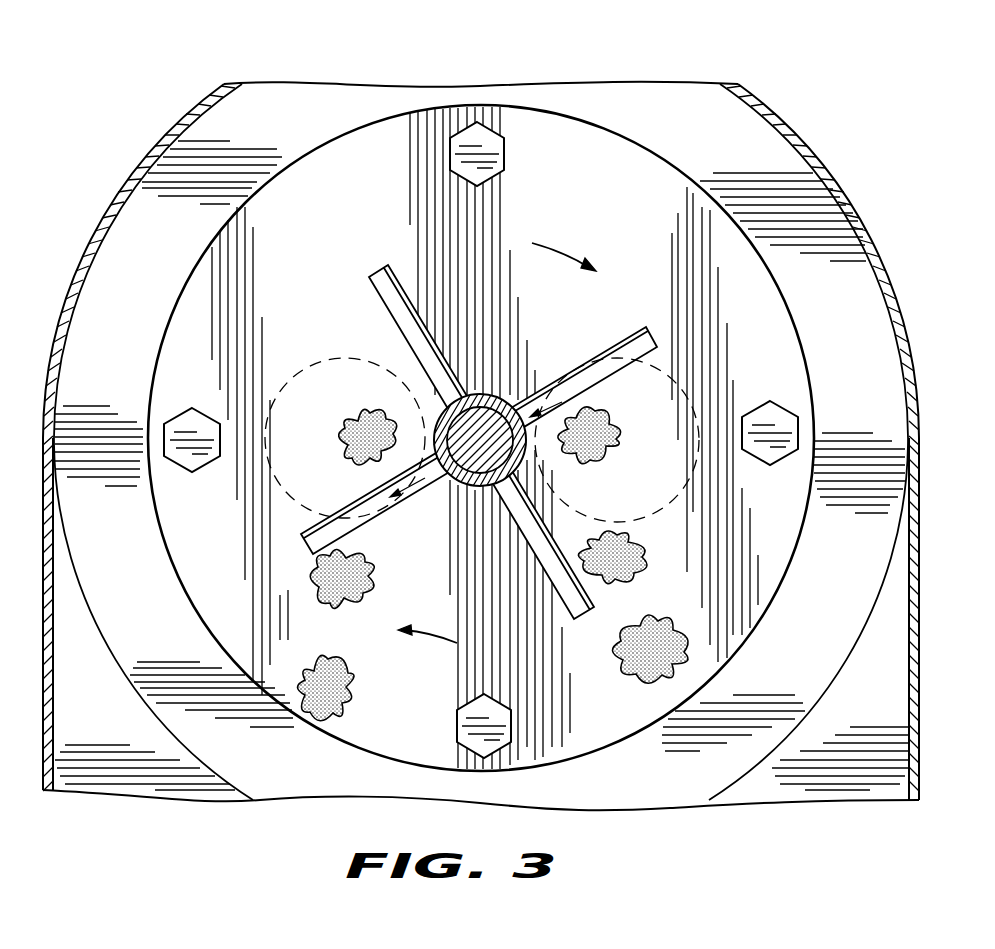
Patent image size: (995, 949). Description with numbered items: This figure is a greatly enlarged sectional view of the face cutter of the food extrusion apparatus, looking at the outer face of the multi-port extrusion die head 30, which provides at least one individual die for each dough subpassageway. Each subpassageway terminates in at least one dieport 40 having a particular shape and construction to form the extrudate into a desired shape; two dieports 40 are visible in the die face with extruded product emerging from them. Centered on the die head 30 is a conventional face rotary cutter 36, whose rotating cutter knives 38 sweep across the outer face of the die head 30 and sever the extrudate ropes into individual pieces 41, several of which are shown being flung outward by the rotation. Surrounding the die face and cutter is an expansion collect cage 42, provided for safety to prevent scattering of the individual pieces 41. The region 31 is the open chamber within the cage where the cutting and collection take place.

The multi-port extrusion die head 30 is at (203, 305).
The chamber bore 31 is at (338, 253).
The face rotary cutter 36 is at (498, 398).
The rotating cutter knife 38 is at (618, 347).
The dieport 40 is at (356, 418).
The individual pieces 41 is at (353, 677).
The expansion collect cage 42 is at (820, 168).